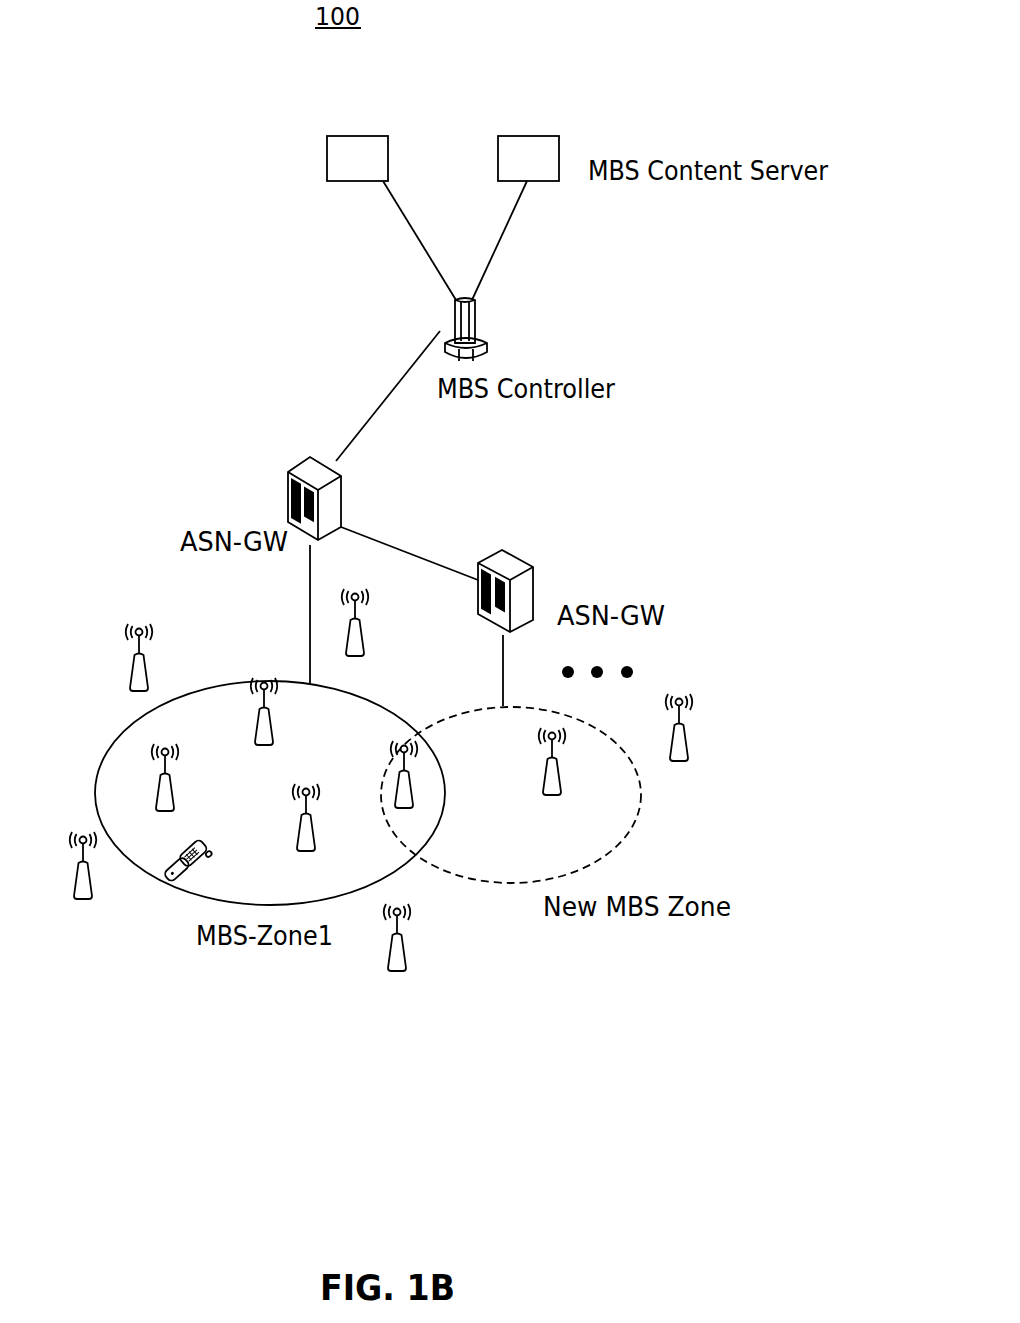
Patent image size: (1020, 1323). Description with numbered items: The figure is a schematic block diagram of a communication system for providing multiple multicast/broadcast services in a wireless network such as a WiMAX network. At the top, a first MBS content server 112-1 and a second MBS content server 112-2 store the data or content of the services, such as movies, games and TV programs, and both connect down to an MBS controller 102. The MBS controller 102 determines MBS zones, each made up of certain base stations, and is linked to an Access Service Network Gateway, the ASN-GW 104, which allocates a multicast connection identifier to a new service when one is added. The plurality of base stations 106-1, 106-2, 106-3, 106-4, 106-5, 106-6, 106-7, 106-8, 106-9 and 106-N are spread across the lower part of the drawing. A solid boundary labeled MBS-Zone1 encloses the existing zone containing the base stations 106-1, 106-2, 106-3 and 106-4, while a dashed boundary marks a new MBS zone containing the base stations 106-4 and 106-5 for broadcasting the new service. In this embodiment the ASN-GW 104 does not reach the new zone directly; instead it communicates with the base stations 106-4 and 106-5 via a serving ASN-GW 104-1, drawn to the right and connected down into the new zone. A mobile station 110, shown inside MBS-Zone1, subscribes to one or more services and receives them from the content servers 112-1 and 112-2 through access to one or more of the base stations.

The MBS controller 102 is at (497, 342).
The Access Service Network Gateway (ASN-GW) 104 is at (341, 500).
The serving ASN-GW 104-1 is at (533, 558).
The base station 106-1 is at (174, 790).
The base station 106-2 is at (273, 724).
The base station 106-3 is at (298, 838).
The base station 106-4 is at (412, 785).
The base station 106-5 is at (553, 796).
The base station 106-6 is at (364, 648).
The base station 106-7 is at (148, 665).
The base station 106-8 is at (86, 899).
The base station 106-9 is at (402, 968).
The base station 106-N is at (688, 738).
The mobile station 110 is at (188, 875).
The first MBS content server 112-1 is at (388, 157).
The second MBS content server 112-2 is at (559, 155).